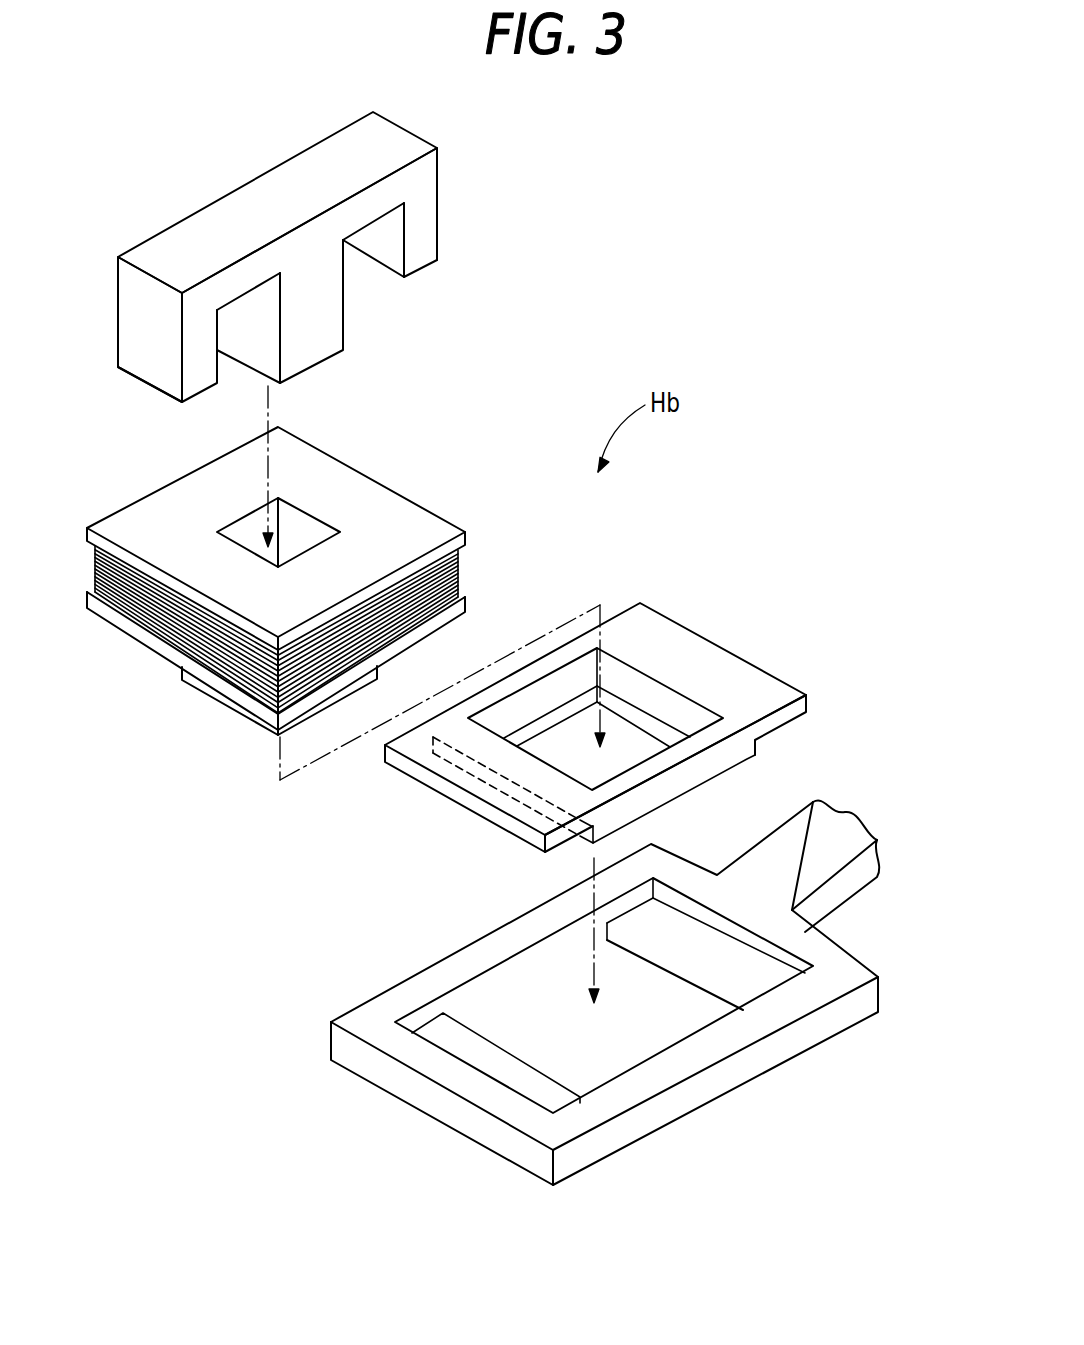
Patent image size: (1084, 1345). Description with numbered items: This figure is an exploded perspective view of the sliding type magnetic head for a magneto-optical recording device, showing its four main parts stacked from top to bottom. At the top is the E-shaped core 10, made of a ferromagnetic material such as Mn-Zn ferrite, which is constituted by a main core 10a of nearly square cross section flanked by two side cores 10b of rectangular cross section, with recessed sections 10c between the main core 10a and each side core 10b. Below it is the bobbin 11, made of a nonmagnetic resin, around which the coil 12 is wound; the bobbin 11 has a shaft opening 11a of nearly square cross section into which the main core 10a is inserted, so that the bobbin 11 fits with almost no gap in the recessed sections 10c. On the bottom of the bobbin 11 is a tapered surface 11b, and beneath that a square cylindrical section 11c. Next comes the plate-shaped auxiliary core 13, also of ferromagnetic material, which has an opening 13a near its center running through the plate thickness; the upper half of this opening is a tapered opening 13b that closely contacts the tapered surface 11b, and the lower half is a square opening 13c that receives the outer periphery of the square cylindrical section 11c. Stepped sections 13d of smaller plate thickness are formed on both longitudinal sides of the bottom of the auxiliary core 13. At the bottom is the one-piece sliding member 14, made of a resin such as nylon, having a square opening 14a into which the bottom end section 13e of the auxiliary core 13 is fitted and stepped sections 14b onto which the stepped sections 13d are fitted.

The E-shaped core 10 is at (447, 182).
The main core 10a is at (313, 337).
The side cores 10b is at (425, 242).
The recessed sections 10c is at (357, 282).
The bobbin 11 is at (418, 503).
The shaft opening 11a is at (300, 532).
The tapered surface 11b is at (178, 662).
The square cylindrical section 11c is at (247, 712).
The coil 12 is at (462, 565).
The auxiliary core 13 is at (785, 675).
The opening 13a is at (613, 750).
The tapered opening 13b is at (640, 678).
The square opening 13c is at (657, 728).
The stepped sections 13d is at (778, 732).
The bottom end section 13e is at (655, 793).
The sliding member 14 is at (763, 1078).
The square opening 14a is at (572, 1047).
The stepped sections 14b is at (737, 972).